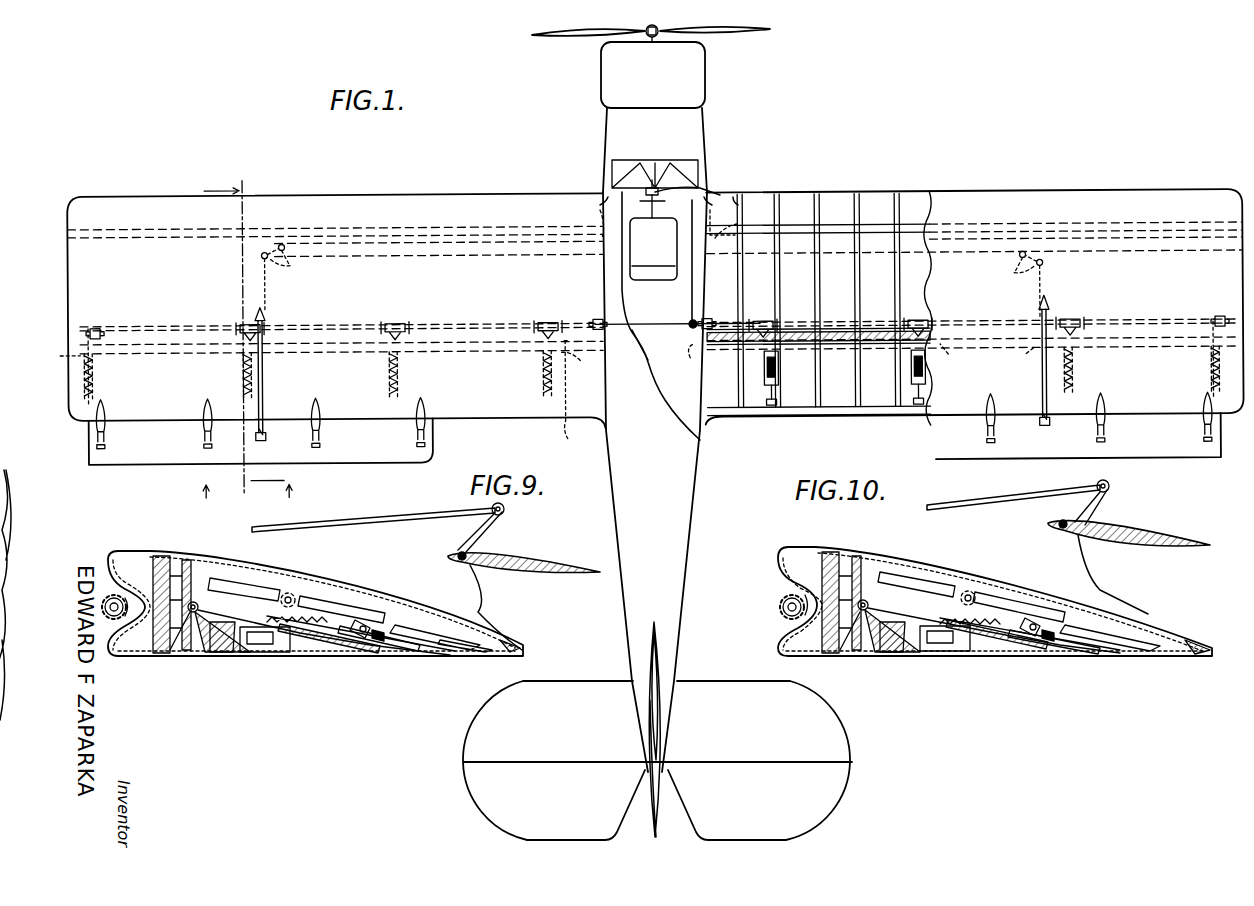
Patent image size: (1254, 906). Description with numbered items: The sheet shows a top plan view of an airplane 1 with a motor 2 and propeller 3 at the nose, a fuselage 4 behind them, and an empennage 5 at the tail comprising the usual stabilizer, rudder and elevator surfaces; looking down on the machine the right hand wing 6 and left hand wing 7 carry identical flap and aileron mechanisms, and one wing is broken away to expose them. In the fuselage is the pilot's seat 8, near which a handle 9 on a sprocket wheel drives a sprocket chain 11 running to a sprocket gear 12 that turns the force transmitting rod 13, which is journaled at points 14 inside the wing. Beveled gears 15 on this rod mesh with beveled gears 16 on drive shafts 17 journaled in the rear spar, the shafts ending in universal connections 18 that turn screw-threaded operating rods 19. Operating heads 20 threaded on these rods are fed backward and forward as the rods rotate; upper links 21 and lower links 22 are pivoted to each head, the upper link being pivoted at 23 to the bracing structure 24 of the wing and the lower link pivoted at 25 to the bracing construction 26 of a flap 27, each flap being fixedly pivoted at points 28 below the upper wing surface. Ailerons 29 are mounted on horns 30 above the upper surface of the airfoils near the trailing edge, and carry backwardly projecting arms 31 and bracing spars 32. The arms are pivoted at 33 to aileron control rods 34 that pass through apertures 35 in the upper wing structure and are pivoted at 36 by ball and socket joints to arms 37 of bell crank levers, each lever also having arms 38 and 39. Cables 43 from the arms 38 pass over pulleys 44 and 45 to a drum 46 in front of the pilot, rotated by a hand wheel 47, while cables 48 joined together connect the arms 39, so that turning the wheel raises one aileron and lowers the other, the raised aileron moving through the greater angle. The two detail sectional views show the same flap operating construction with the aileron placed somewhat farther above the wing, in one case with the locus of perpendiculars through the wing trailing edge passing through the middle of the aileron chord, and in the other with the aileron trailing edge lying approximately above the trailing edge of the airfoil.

In FIG. 1, the airplane 1 is at (602, 132).
In FIG. 1, the motor 2 is at (602, 82).
In FIG. 1, the propeller 3 is at (762, 35).
In FIG. 1, the fuselage 4 is at (680, 535).
In FIG. 1, the empennage 5 is at (698, 678).
In FIG. 1, the right hand wing 6 is at (1085, 178).
In FIG. 9, the right hand wing 6 is at (150, 556).
In FIG. 10, the right hand wing 6 is at (840, 553).
In FIG. 1, the left hand wing 7 is at (285, 198).
In FIG. 1, the pilot's seat 8 is at (645, 282).
In FIG. 1, the handle 9 is at (676, 210).
In FIG. 1, the sprocket chain 11 is at (690, 292).
In FIG. 1, the sprocket gear 12 is at (688, 330).
In FIG. 1, the force transmitting rod 13 is at (644, 350).
In FIG. 9, the force transmitting rod 13 is at (102, 604).
In FIG. 10, the force transmitting rod 13 is at (780, 607).
In FIG. 1, the journal points 14 is at (1223, 322).
In FIG. 1, the beveled gears 15 is at (1072, 311).
In FIG. 9, the beveled gears 15 is at (109, 592).
In FIG. 10, the beveled gears 15 is at (785, 595).
In FIG. 1, the beveled gears 16 is at (1087, 312).
In FIG. 9, the beveled gears 16 is at (126, 595).
In FIG. 10, the beveled gears 16 is at (809, 594).
In FIG. 1, the drive shafts 17 is at (790, 338).
In FIG. 1, the universal connections 18 is at (790, 352).
In FIG. 9, the universal connections 18 is at (210, 600).
In FIG. 10, the universal connections 18 is at (880, 660).
In FIG. 1, the operating rods 19 is at (904, 355).
In FIG. 9, the operating rods 19 is at (255, 610).
In FIG. 10, the operating rods 19 is at (895, 612).
In FIG. 1, the operating heads 20 is at (905, 400).
In FIG. 9, the operating heads 20 is at (380, 625).
In FIG. 10, the operating heads 20 is at (1055, 645).
In FIG. 1, the upper links 21 is at (776, 382).
In FIG. 9, the upper links 21 is at (352, 615).
In FIG. 10, the upper links 21 is at (1030, 615).
In FIG. 1, the lower links 22 is at (777, 368).
In FIG. 9, the lower links 22 is at (335, 648).
In FIG. 10, the lower links 22 is at (1020, 648).
In FIG. 9, the pivot 23 is at (300, 600).
In FIG. 10, the pivot 23 is at (970, 590).
In FIG. 9, the bracing structure 24 is at (325, 600).
In FIG. 9, the pivot 25 is at (293, 648).
In FIG. 10, the pivot 25 is at (959, 680).
In FIG. 1, the bracing construction 26 is at (870, 410).
In FIG. 9, the bracing construction 26 is at (258, 655).
In FIG. 10, the bracing construction 26 is at (980, 655).
In FIG. 1, the flap 27 is at (810, 422).
In FIG. 9, the flap 27 is at (420, 655).
In FIG. 10, the flap 27 is at (1145, 655).
In FIG. 1, the pivot points 28 is at (539, 356).
In FIG. 9, the pivot points 28 is at (195, 615).
In FIG. 10, the pivot points 28 is at (868, 598).
In FIG. 1, the ailerons 29 is at (1190, 460).
In FIG. 9, the ailerons 29 is at (585, 560).
In FIG. 10, the ailerons 29 is at (1182, 536).
In FIG. 1, the horns 30 is at (1203, 404).
In FIG. 9, the horns 30 is at (500, 605).
In FIG. 10, the horns 30 is at (1140, 577).
In FIG. 1, the arms 31 is at (1057, 423).
In FIG. 9, the arms 31 is at (460, 530).
In FIG. 10, the arms 31 is at (1095, 510).
In FIG. 9, the bracing spars 32 is at (455, 565).
In FIG. 10, the bracing spars 32 is at (1058, 530).
In FIG. 1, the pivot 33 is at (1031, 430).
In FIG. 9, the pivot 33 is at (505, 511).
In FIG. 10, the pivot 33 is at (1110, 488).
In FIG. 1, the aileron control rods 34 is at (1030, 385).
In FIG. 9, the aileron control rods 34 is at (355, 520).
In FIG. 10, the aileron control rods 34 is at (988, 498).
In FIG. 1, the apertures 35 is at (1027, 305).
In FIG. 1, the pivot 36 is at (1055, 254).
In FIG. 1, the arms 37 is at (1037, 250).
In FIG. 1, the arms 38 is at (1013, 247).
In FIG. 1, the arms 39 is at (654, 268).
In FIG. 1, the cables 43 is at (875, 220).
In FIG. 1, the pulleys 44 is at (752, 217).
In FIG. 1, the pulleys 45 is at (734, 210).
In FIG. 1, the drum 46 is at (654, 181).
In FIG. 1, the hand wheel 47 is at (718, 192).
In FIG. 1, the cables 48 is at (824, 254).